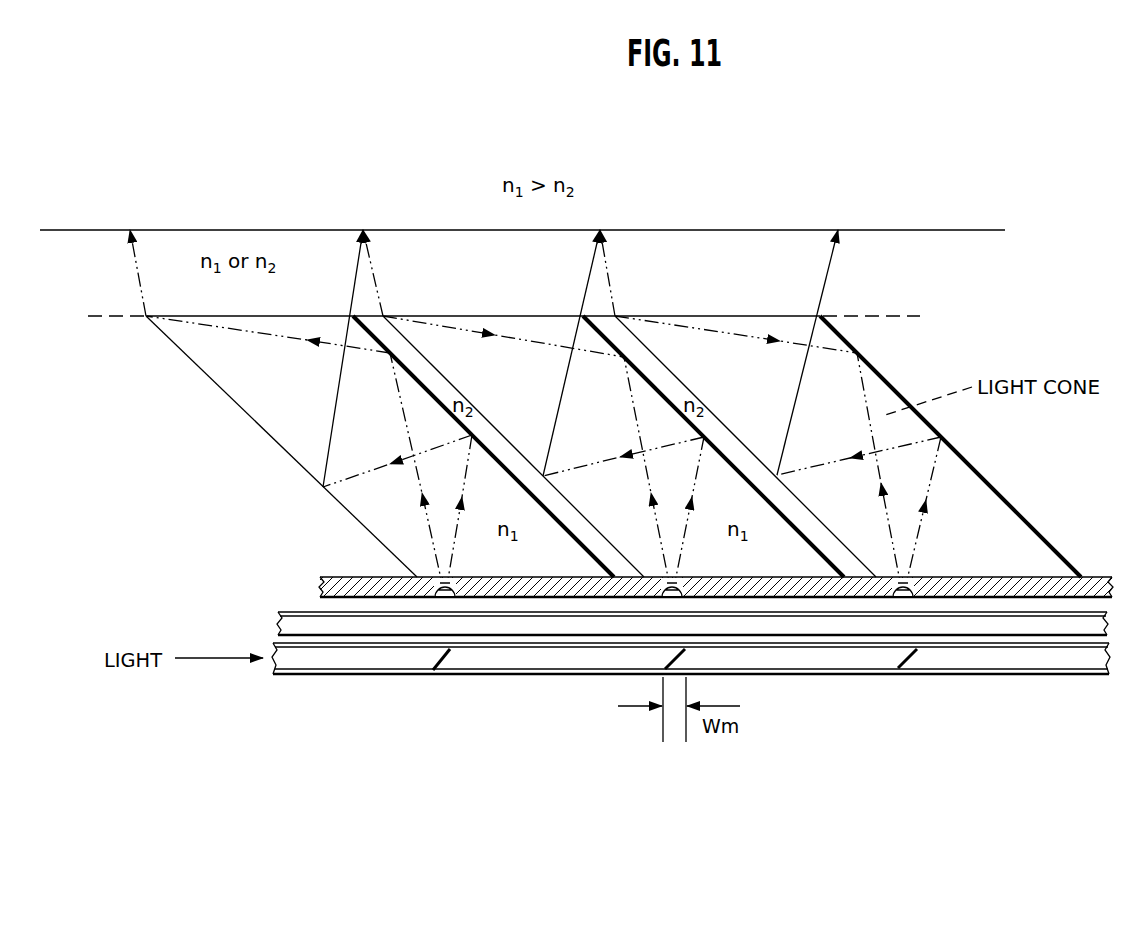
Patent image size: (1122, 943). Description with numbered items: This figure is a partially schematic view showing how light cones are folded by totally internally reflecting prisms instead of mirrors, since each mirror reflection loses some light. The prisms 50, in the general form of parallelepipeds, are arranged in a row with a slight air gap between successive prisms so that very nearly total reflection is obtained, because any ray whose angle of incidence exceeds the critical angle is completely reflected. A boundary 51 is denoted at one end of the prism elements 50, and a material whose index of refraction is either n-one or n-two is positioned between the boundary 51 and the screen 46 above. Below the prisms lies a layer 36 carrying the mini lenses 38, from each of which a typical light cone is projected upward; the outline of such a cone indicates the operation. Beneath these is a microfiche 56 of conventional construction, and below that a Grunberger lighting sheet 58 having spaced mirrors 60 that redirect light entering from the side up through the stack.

The opaque layer with apertures 36 is at (353, 583).
The mini lens 38 is at (440, 577).
The screen 46 is at (743, 230).
The prisms 50 is at (292, 393).
The boundary 51 is at (717, 316).
The microfiche 56 is at (302, 622).
The Grunberger lighting sheet 58 is at (552, 657).
The spaced mirrors 60 is at (433, 665).